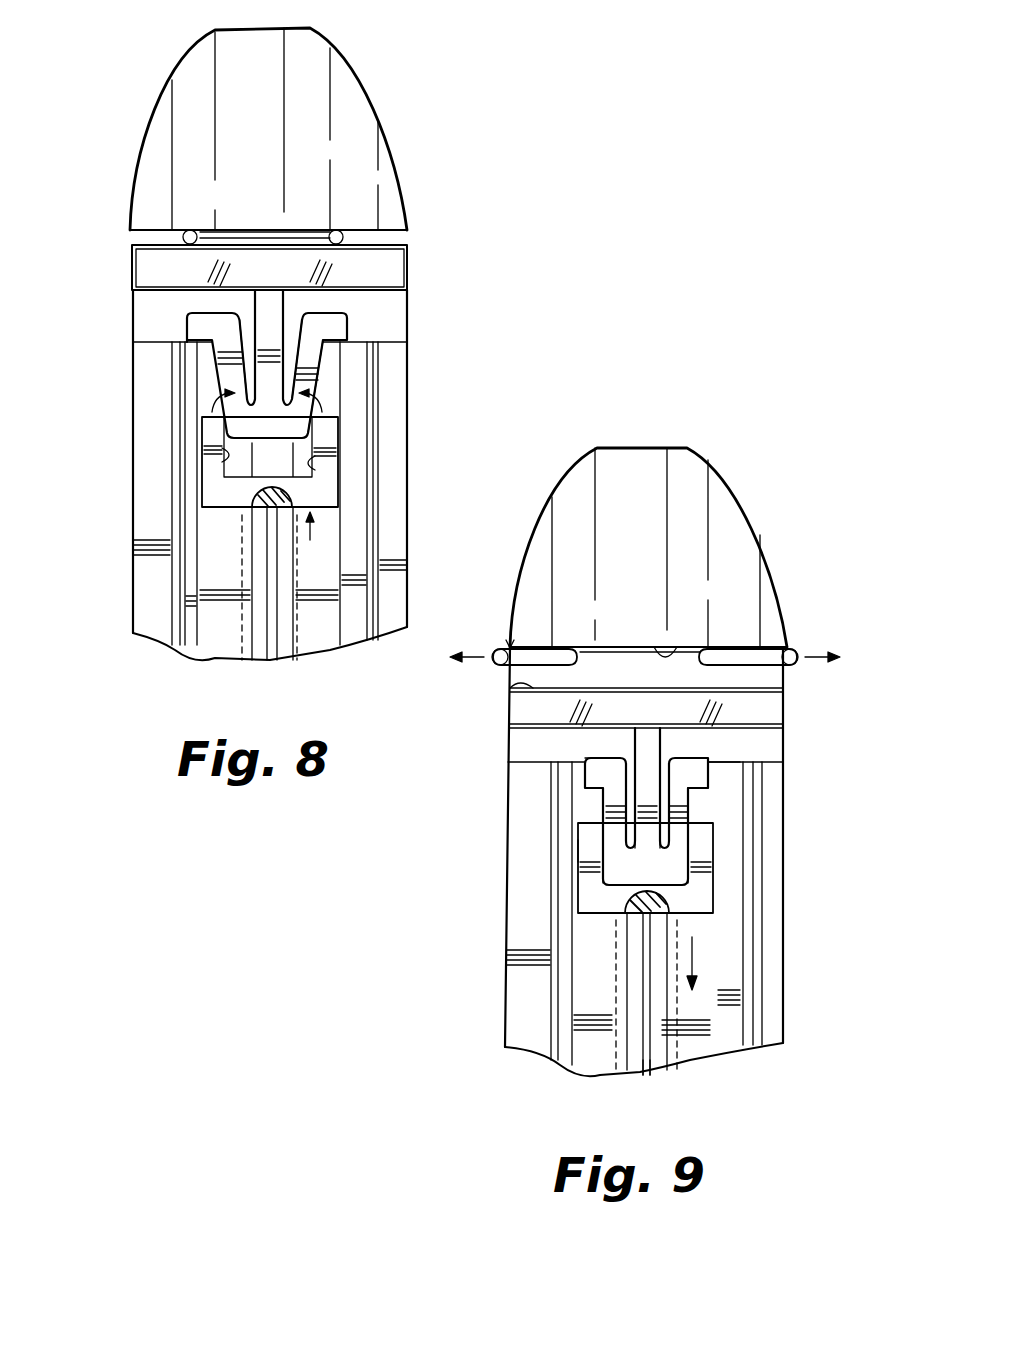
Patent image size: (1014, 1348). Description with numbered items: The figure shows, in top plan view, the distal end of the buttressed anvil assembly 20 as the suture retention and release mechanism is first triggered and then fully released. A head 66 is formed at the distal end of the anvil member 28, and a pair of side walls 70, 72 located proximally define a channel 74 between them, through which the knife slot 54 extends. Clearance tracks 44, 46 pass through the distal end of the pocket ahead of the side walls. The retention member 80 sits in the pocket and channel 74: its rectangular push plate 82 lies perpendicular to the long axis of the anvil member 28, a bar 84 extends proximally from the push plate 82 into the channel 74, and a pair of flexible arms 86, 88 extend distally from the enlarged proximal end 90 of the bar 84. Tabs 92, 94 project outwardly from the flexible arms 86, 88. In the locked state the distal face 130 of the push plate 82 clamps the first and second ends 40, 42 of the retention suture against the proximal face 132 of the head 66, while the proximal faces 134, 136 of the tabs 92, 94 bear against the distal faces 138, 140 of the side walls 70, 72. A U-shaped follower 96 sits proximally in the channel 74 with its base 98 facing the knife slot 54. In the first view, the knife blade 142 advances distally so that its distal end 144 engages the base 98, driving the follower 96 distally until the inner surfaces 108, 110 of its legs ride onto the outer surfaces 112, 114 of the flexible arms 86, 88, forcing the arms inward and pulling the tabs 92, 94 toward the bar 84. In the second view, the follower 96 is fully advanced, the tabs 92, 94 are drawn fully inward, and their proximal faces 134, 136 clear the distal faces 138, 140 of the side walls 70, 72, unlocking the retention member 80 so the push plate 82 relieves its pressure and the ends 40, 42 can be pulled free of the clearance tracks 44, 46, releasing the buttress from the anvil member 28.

In FIG. 8, the buttressed anvil assembly 20 is at (70, 99).
In FIG. 9, the buttressed anvil assembly 20 is at (828, 446).
In FIG. 8, the anvil member 28 is at (208, 36).
In FIG. 9, the anvil member 28 is at (690, 447).
In FIG. 8, the first end of retention component 40 is at (342, 232).
In FIG. 9, the first end of retention component 40 is at (797, 655).
In FIG. 8, the second end of retention component 42 is at (183, 232).
In FIG. 9, the second end of retention component 42 is at (491, 666).
In FIG. 9, the clearance track 44 is at (688, 643).
In FIG. 9, the clearance track 46 is at (510, 645).
In FIG. 8, the knife slot 54 is at (283, 640).
In FIG. 9, the knife slot 54 is at (655, 1060).
In FIG. 9, the head 66 is at (750, 522).
In FIG. 9, the side wall 70 is at (503, 960).
In FIG. 9, the side wall 72 is at (790, 893).
In FIG. 9, the channel 74 is at (587, 973).
In FIG. 9, the retention member 80 is at (438, 835).
In FIG. 8, the push plate 82 is at (392, 270).
In FIG. 9, the push plate 82 is at (765, 712).
In FIG. 8, the bar 84 is at (257, 293).
In FIG. 9, the bar 84 is at (510, 752).
In FIG. 8, the flexible arm 86 is at (220, 358).
In FIG. 9, the flexible arm 86 is at (577, 850).
In FIG. 8, the flexible arm 88 is at (323, 360).
In FIG. 9, the flexible arm 88 is at (690, 830).
In FIG. 8, the enlarged proximal end of bar 90 is at (508, 339).
In FIG. 8, the tab 92 is at (193, 328).
In FIG. 9, the tab 92 is at (585, 775).
In FIG. 8, the tab 94 is at (337, 330).
In FIG. 9, the tab 94 is at (695, 767).
In FIG. 8, the follower 96 is at (212, 514).
In FIG. 9, the follower 96 is at (703, 872).
In FIG. 8, the base 98 is at (222, 512).
In FIG. 9, the base 98 is at (593, 907).
In FIG. 8, the inner surface of leg 108 is at (222, 455).
In FIG. 8, the inner surface of leg 110 is at (307, 473).
In FIG. 8, the outer surface of flexible arm 112 is at (222, 376).
In FIG. 8, the outer surface of flexible arm 114 is at (315, 378).
In FIG. 9, the distal face of push plate 130 is at (510, 690).
In FIG. 9, the proximal face of head 132 is at (660, 660).
In FIG. 9, the proximal face of tab 134 is at (585, 826).
In FIG. 9, the proximal face of tab 136 is at (717, 798).
In FIG. 9, the distal face of side wall 138 is at (510, 752).
In FIG. 9, the distal face of side wall 140 is at (718, 762).
In FIG. 8, the knife blade 142 is at (270, 622).
In FIG. 9, the knife blade 142 is at (650, 1020).
In FIG. 8, the distal end of knife blade 144 is at (292, 490).
In FIG. 9, the distal end of knife blade 144 is at (664, 908).